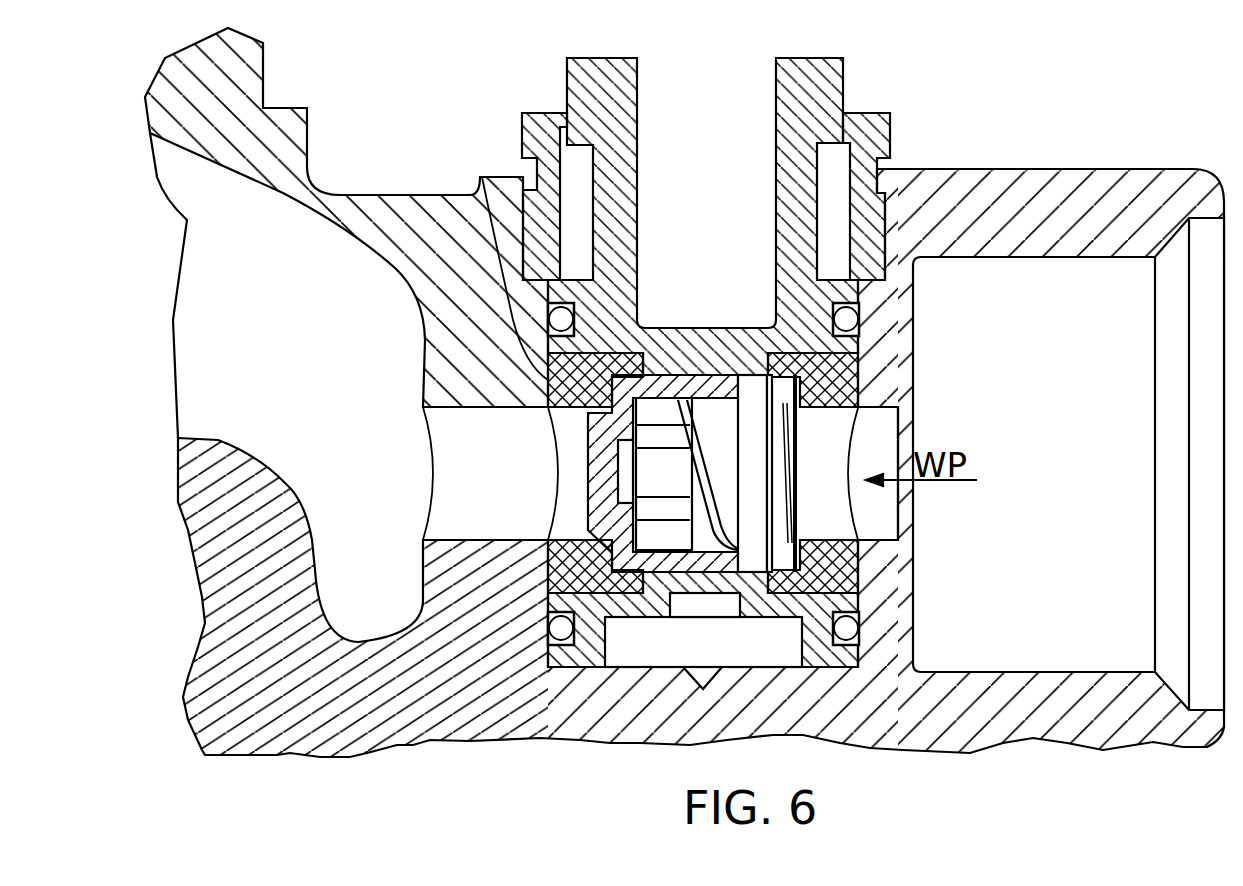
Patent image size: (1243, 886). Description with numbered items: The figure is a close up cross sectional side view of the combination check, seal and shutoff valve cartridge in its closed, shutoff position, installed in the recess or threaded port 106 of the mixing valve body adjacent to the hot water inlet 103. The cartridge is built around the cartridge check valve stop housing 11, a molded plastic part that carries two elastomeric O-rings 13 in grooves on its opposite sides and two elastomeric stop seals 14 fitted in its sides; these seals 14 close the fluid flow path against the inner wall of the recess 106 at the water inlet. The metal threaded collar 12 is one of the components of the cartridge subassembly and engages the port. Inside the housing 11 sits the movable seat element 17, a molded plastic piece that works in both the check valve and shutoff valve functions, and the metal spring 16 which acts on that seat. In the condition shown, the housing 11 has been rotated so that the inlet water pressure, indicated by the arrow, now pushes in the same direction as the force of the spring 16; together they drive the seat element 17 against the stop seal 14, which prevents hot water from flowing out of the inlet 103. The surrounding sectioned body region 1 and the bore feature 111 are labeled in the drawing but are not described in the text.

The body 1 is at (288, 125).
The cartridge check valve stop housing 11 is at (820, 85).
The threaded collar 12 is at (890, 137).
The O-rings 13 is at (856, 318).
The stop seals 14 is at (480, 177).
The spring 16 is at (695, 472).
The movable seat element 17 is at (592, 445).
The hot water inlet 103 is at (898, 501).
The threaded port 106 is at (520, 568).
The bore 111 is at (618, 372).